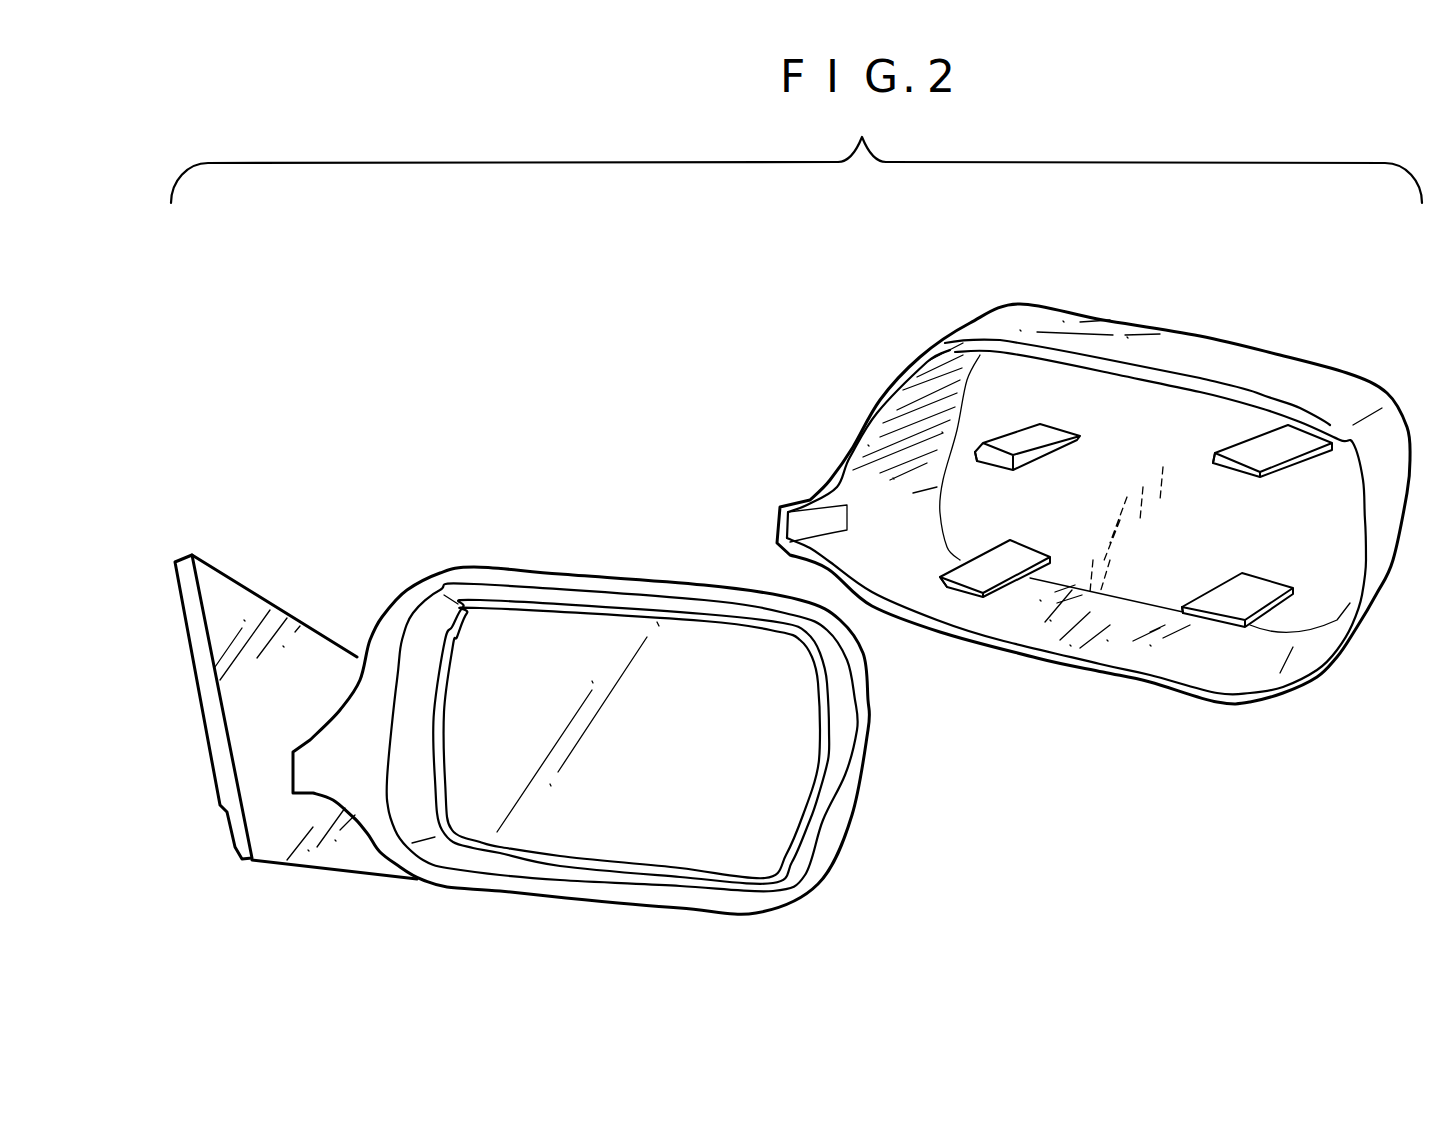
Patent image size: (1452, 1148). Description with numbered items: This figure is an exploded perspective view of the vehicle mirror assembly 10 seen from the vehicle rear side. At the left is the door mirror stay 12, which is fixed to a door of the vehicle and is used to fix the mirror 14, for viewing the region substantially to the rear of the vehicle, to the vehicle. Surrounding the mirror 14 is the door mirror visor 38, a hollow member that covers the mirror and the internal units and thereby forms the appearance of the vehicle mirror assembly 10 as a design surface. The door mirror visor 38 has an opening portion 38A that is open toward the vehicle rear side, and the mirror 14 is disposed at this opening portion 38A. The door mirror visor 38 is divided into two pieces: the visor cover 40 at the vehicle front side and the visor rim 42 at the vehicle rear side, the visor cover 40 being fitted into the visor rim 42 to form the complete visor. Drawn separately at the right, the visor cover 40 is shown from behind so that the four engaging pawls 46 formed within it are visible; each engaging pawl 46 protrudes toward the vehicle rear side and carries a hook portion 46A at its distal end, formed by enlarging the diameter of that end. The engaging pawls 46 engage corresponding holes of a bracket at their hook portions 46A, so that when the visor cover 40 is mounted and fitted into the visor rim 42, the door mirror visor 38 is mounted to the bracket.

The vehicle mirror assembly 10 is at (792, 576).
The door mirror stay 12 is at (227, 598).
The mirror 14 is at (708, 643).
The door mirror visor 38 is at (437, 573).
The opening portion 38A is at (430, 638).
The visor cover 40 is at (1323, 383).
The visor rim 42 is at (845, 760).
The engaging pawl 46 is at (1060, 453).
The hook portion 46A is at (980, 463).